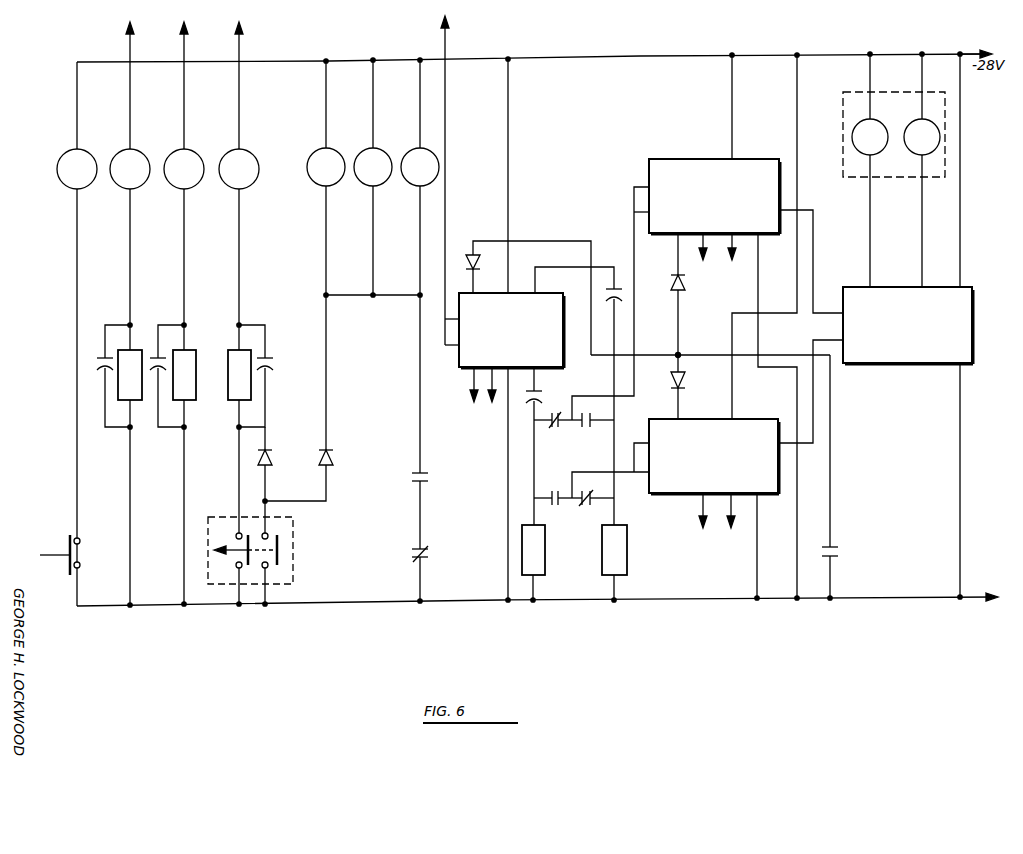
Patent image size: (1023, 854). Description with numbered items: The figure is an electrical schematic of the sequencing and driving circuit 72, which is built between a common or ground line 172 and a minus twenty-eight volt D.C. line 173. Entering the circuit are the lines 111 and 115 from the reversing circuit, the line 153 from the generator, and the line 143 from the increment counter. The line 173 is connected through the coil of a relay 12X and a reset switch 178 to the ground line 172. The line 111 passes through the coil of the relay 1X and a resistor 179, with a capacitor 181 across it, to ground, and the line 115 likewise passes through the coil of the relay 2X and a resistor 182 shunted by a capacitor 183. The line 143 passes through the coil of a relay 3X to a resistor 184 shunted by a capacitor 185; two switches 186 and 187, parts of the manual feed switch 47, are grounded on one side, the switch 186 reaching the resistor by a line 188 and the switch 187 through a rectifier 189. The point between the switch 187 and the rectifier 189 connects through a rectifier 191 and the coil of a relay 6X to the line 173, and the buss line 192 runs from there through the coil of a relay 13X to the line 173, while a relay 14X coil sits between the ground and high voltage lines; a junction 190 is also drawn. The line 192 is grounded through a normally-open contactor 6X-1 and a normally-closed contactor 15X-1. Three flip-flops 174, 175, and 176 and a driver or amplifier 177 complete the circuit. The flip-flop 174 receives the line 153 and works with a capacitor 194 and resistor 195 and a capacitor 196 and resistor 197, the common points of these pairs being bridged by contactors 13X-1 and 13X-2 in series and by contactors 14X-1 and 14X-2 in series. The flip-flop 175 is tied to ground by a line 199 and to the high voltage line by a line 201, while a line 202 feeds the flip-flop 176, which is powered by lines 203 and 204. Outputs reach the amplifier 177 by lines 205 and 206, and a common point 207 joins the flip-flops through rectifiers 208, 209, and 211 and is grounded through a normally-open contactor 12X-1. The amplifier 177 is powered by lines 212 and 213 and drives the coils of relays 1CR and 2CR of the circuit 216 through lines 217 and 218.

The sequencing and driving circuit 72 is at (644, 54).
The line 111 is at (111, 42).
The line 115 is at (184, 45).
The line 143 is at (241, 52).
The line 153 is at (463, 180).
The common or ground line 172 is at (962, 597).
The −28 volts D.C. line 173 is at (966, 54).
The relay 12X is at (66, 170).
The relay 1X is at (131, 166).
The relay 2X is at (187, 160).
The relay 3X is at (246, 158).
The relay 6X is at (325, 180).
The relay 13X is at (370, 182).
The relay 14X is at (418, 182).
The relay 1CR is at (858, 130).
The relay 2CR is at (930, 137).
The 15-megohm resistor 179 is at (134, 398).
The 5-microfarad capacitor 181 is at (94, 358).
The 15-megohm resistor 182 is at (188, 366).
The capacitor 183 is at (156, 352).
The 15-megohm resistor 184 is at (240, 388).
The 5-microfarad capacitor 185 is at (268, 358).
The line 188 is at (237, 470).
The rectifier 189 is at (272, 457).
The rectifier 191 is at (334, 456).
The junction 190 is at (345, 295).
The reset switch 178 is at (68, 552).
The manual feed switch 47 is at (295, 576).
The switch 186 is at (236, 538).
The switch 187 is at (282, 544).
The normally-open contactor 6X-1 is at (430, 477).
The normally-closed contactor 15X-1 is at (427, 553).
The normally-open contactor 12X-1 is at (835, 548).
The normally-closed contactor 13X-1 is at (552, 427).
The normally-open contactor 13X-2 is at (597, 418).
The normally-open contactor 14X-1 is at (552, 490).
The normally-closed contactor 14X-2 is at (590, 505).
The flip-flop 174 is at (462, 352).
The flip-flop 175 is at (684, 488).
The flip-flop 176 is at (709, 158).
The driver or amplifier 177 is at (919, 362).
The buss line 192 is at (510, 172).
The .005-microfarad capacitor 194 is at (540, 393).
The 4.7-megohm resistor 195 is at (545, 572).
The .005-microfarad capacitor 196 is at (606, 290).
The 4.7-megohm resistor 197 is at (628, 546).
The line 199 is at (756, 565).
The line 201 is at (799, 133).
The line 202 is at (636, 333).
The line 203 is at (734, 118).
The line 204 is at (760, 307).
The line 205 is at (818, 304).
The line 206 is at (826, 340).
The common point 207 is at (680, 355).
The rectifier 208 is at (470, 256).
The rectifier 209 is at (671, 283).
The rectifier 211 is at (686, 381).
The line 212 is at (962, 206).
The line 213 is at (958, 440).
The circuit 216 is at (856, 177).
The line 217 is at (870, 221).
The line 218 is at (922, 219).